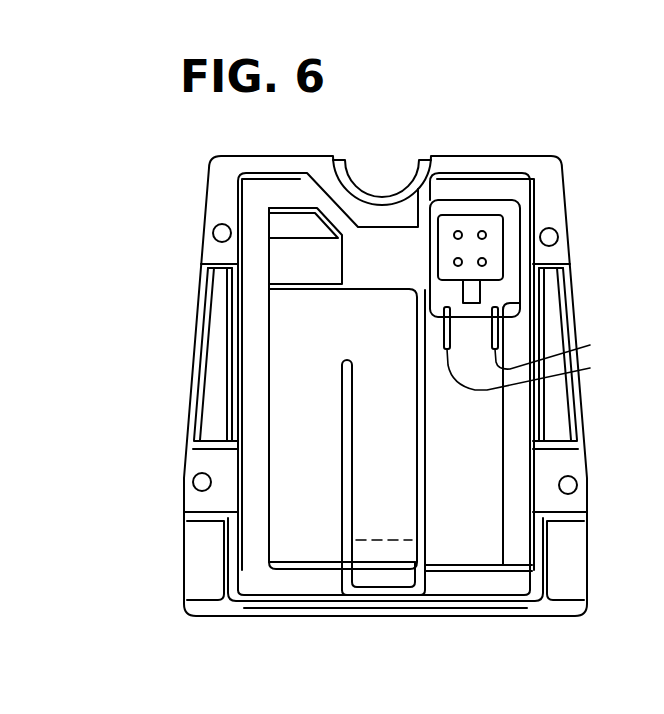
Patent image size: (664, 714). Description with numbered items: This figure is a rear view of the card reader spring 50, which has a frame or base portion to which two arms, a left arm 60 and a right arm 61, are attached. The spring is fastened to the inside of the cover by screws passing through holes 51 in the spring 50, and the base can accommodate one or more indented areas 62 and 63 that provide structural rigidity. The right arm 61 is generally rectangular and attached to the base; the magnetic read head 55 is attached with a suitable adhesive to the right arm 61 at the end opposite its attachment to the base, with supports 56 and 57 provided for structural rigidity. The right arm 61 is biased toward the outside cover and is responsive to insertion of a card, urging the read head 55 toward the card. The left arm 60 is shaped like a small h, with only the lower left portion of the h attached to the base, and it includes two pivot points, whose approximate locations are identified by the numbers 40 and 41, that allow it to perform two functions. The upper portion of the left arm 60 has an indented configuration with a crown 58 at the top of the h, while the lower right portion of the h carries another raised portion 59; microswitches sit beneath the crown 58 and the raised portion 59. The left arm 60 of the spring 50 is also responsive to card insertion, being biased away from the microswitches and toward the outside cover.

The pivot point 40 is at (312, 567).
The pivot point 41 is at (370, 315).
The card reader spring 50 is at (484, 155).
The holes 51 is at (207, 231).
The magnetic read head 55 is at (492, 267).
The support 56 is at (590, 345).
The support 57 is at (590, 368).
The crown 58 is at (282, 262).
The raised portion 59 is at (385, 553).
The left arm 60 is at (303, 548).
The right arm 61 is at (467, 533).
The indented area 62 is at (213, 356).
The indented area 63 is at (557, 412).